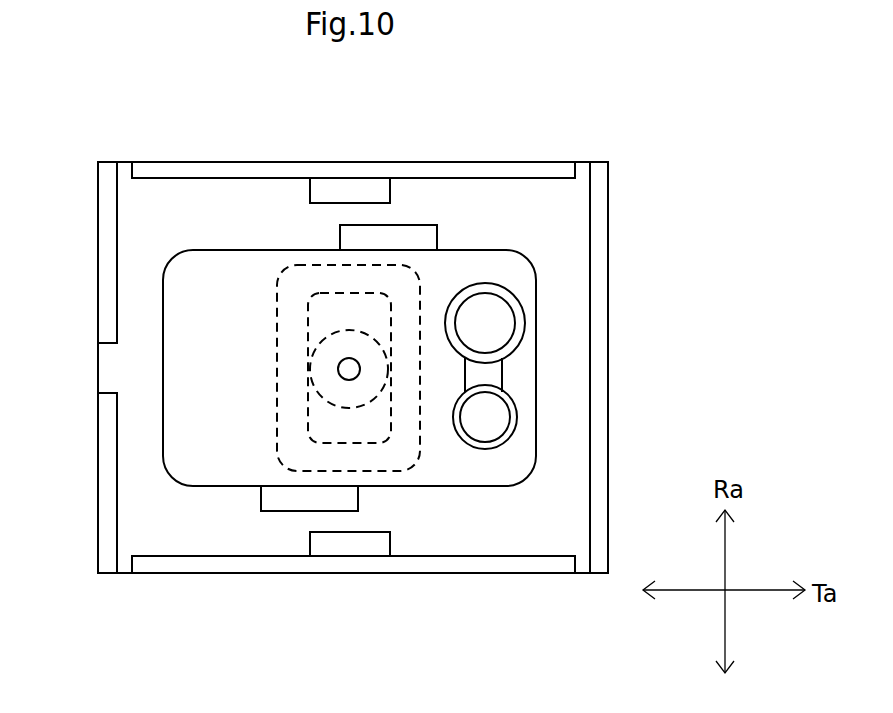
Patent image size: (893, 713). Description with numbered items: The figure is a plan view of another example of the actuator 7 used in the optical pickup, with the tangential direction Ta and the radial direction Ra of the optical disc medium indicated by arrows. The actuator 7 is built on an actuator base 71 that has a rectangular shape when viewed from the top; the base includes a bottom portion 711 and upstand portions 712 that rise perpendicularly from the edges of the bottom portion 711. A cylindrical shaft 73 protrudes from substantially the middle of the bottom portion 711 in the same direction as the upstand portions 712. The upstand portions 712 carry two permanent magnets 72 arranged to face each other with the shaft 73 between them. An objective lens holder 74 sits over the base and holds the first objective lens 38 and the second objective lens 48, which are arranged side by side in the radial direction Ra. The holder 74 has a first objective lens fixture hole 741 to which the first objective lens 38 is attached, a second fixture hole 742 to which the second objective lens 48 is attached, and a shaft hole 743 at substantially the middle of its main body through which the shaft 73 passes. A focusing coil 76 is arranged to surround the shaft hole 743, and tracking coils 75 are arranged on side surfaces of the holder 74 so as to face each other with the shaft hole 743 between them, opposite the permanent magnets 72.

The actuator 7 is at (124, 90).
The actuator base 71 is at (145, 233).
The bottom portion 711 is at (143, 284).
The upstand portions 712 is at (194, 163).
The permanent magnets 72 is at (351, 193).
The shaft 73 is at (345, 369).
The objective lens holder 74 is at (197, 435).
The first objective lens fixture hole 741 is at (490, 293).
The second fixture hole 742 is at (512, 427).
The shaft hole 743 is at (362, 379).
The tracking coils 75 is at (400, 233).
The focusing coil 76 is at (392, 463).
The first objective lens 38 is at (487, 328).
The second objective lens 48 is at (492, 409).